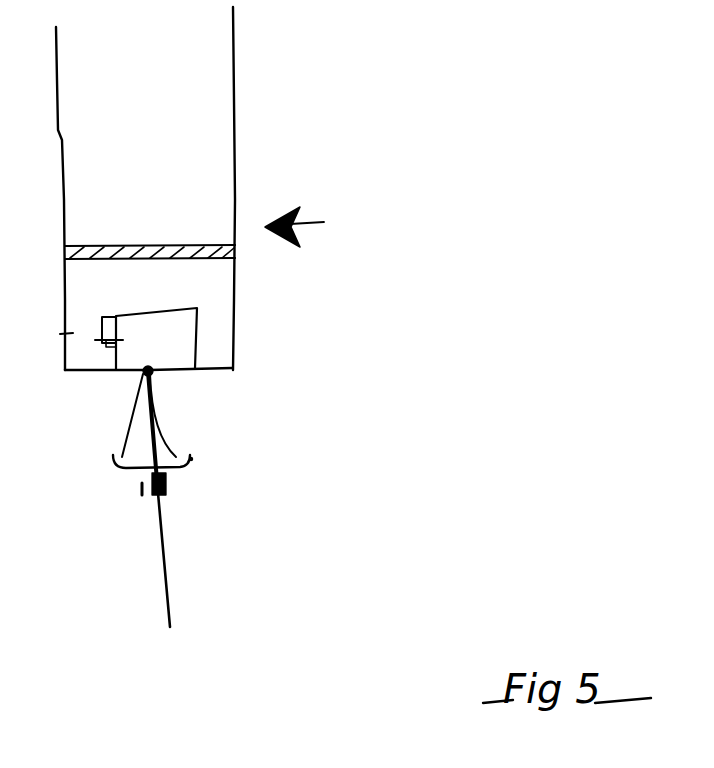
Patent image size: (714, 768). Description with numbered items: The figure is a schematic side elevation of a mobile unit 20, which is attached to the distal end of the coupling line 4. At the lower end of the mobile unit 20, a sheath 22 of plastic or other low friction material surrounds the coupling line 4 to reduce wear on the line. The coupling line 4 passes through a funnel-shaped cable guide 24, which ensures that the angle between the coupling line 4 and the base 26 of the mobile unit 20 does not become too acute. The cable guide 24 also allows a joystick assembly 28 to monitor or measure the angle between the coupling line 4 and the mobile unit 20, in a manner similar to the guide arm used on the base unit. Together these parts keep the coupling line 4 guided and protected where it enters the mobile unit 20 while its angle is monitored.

The coupling line 4 is at (165, 558).
The mobile unit 20 is at (328, 227).
The sheath 22 is at (166, 486).
The funnel-shaped cable guide 24 is at (156, 420).
The base 26 is at (232, 370).
The joystick assembly 28 is at (192, 322).